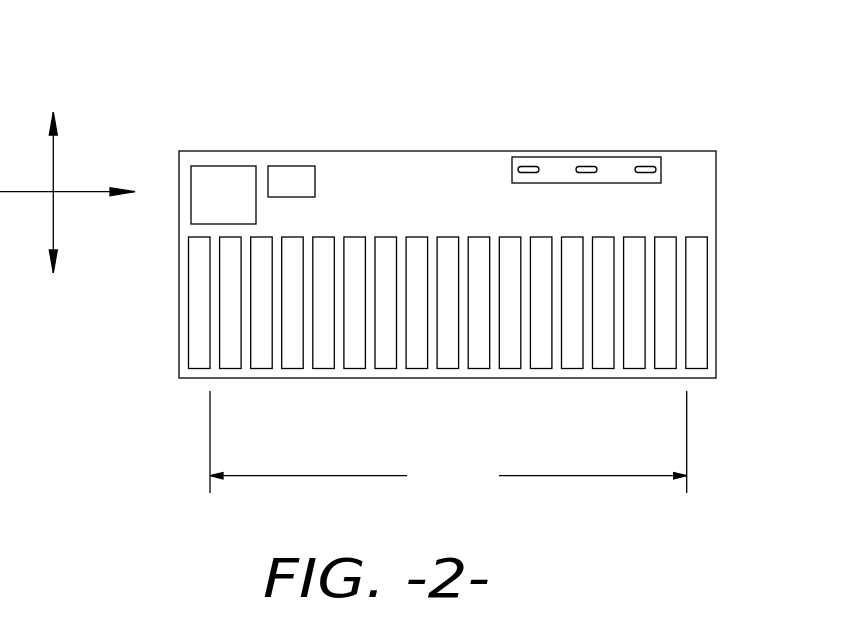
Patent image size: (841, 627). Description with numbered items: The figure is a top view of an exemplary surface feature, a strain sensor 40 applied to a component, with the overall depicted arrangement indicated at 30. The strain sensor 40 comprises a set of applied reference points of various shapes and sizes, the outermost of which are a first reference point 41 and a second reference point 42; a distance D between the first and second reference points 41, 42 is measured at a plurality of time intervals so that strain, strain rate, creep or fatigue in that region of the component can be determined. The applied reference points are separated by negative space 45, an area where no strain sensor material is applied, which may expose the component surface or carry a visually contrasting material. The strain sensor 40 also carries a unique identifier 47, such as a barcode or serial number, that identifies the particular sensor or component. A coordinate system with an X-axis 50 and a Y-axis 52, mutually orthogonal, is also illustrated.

The heat exchanger assembly 30 is at (257, 102).
The strain sensor 40 is at (433, 150).
The unique identifier 47 is at (608, 157).
The negative space 45 is at (216, 270).
The first reference point 41 is at (195, 373).
The second reference point 42 is at (697, 373).
The X-axis 50 is at (54, 160).
The Y-axis 52 is at (77, 192).